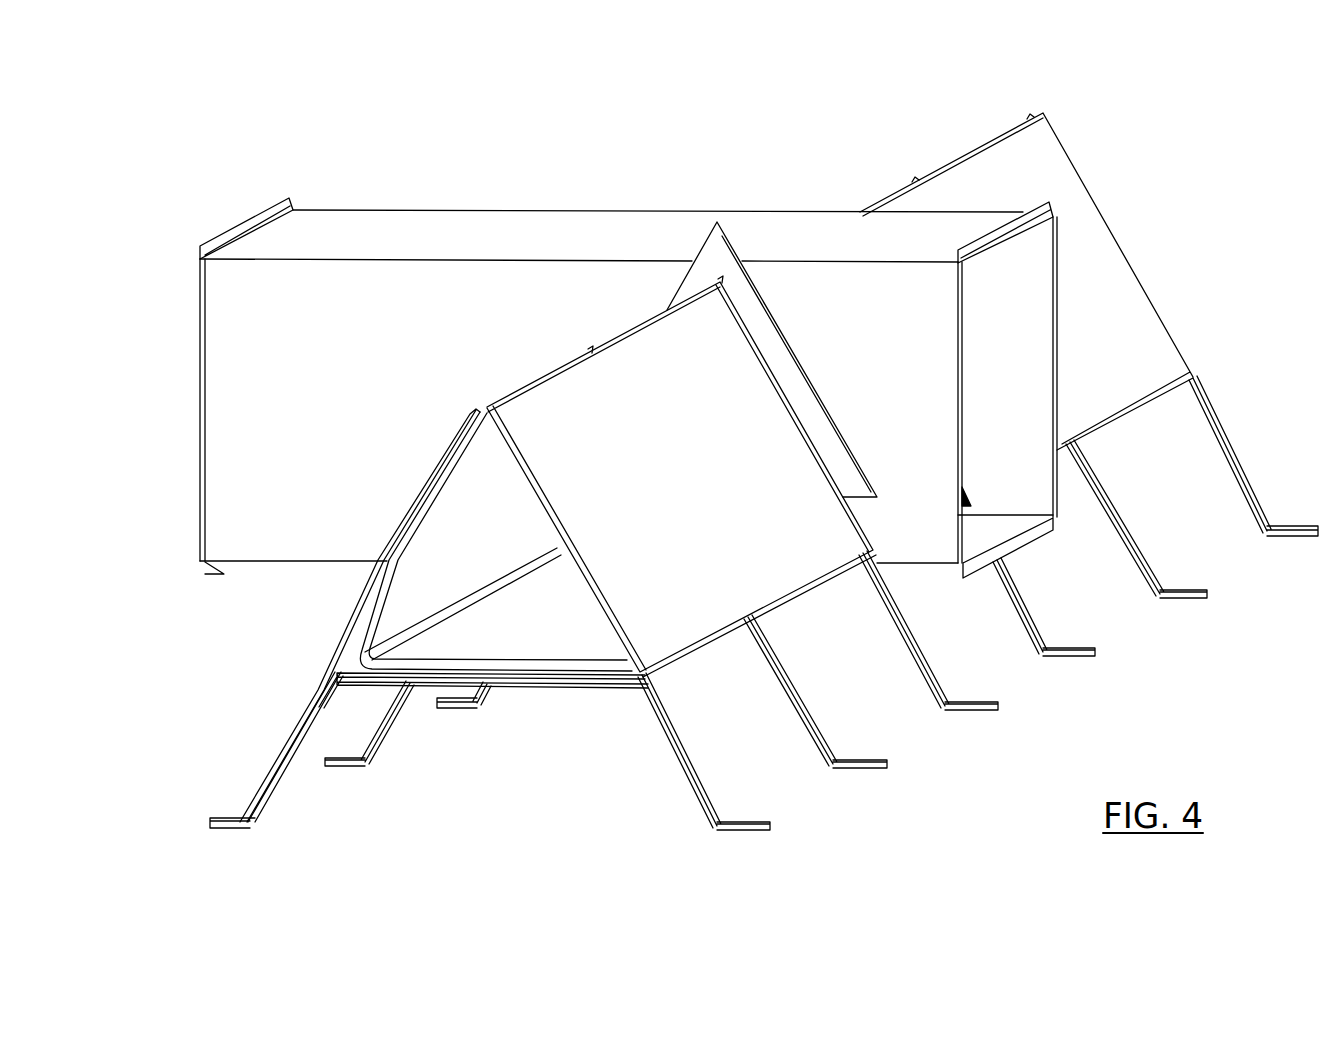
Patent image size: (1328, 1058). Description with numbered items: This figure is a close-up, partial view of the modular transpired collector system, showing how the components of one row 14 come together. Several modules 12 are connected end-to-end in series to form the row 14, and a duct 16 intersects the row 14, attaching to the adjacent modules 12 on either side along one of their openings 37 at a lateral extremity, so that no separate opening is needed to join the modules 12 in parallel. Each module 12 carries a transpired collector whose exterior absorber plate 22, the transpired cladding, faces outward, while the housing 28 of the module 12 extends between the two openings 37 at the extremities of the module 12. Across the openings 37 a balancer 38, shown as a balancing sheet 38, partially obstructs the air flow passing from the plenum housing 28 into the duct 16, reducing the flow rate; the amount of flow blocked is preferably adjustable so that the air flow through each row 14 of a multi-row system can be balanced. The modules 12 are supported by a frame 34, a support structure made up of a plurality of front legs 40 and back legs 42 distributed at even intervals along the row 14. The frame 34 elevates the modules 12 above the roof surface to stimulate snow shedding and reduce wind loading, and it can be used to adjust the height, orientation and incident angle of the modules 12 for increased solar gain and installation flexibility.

The module 12 is at (178, 616).
The row 14 is at (1128, 177).
The duct 16 is at (383, 227).
The exterior absorber plate 22 is at (767, 560).
The housing 28 is at (460, 468).
The frame 34 is at (365, 590).
The opening 37 is at (823, 436).
The balancer 38 is at (707, 234).
The front legs 40 is at (513, 680).
The back legs 42 is at (343, 642).